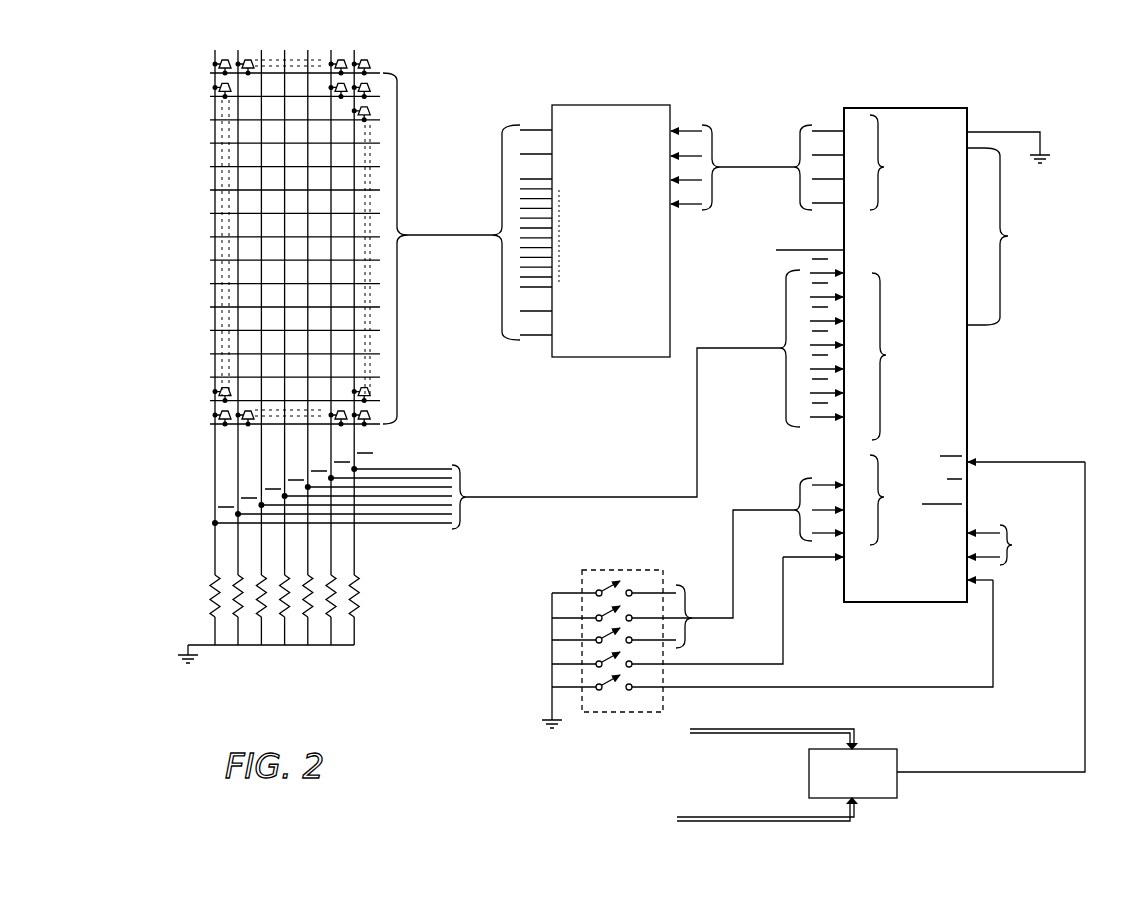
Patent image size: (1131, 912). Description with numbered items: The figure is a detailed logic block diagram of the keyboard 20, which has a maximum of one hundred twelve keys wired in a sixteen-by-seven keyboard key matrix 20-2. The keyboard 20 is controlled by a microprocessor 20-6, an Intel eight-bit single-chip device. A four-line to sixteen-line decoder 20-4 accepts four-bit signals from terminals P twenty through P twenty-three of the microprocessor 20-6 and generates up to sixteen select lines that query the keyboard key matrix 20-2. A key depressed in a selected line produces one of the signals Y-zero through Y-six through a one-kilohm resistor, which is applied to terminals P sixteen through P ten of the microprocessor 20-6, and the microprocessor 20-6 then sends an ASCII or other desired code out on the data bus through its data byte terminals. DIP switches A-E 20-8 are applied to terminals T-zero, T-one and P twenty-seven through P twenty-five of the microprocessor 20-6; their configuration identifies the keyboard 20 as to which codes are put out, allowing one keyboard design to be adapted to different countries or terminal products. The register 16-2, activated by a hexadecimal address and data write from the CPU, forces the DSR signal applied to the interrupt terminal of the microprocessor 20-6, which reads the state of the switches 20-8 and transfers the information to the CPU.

The keyboard 20 is at (360, 727).
The keyboard key matrix 20-2 is at (400, 356).
The 4-line to 16-line decoder 20-4 is at (640, 105).
The microprocessor 20-6 is at (930, 108).
The DIP switches 20-8 is at (650, 570).
The register 16-2 is at (880, 749).